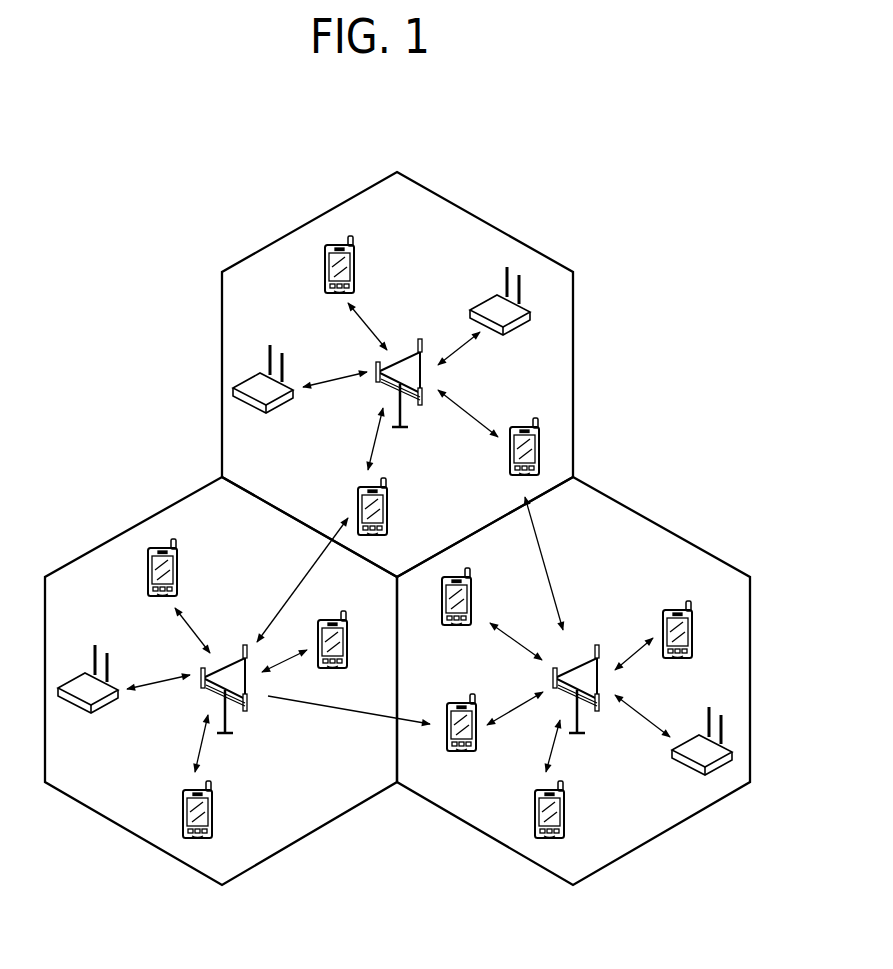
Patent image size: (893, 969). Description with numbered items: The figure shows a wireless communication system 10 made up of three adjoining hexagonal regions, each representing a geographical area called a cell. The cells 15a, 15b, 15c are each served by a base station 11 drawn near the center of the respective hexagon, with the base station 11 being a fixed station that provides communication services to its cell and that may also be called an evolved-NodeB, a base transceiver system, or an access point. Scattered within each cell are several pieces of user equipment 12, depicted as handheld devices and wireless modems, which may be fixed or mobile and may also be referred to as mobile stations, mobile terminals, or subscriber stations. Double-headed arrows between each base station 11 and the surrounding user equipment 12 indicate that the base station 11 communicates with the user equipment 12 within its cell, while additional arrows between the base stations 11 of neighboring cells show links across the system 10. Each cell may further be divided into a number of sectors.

The wireless communication system 10 is at (397, 528).
The base station 11 is at (412, 352).
The user equipment 12 is at (354, 266).
The cell 15a is at (573, 362).
The cell 15b is at (686, 540).
The cell 15c is at (112, 540).